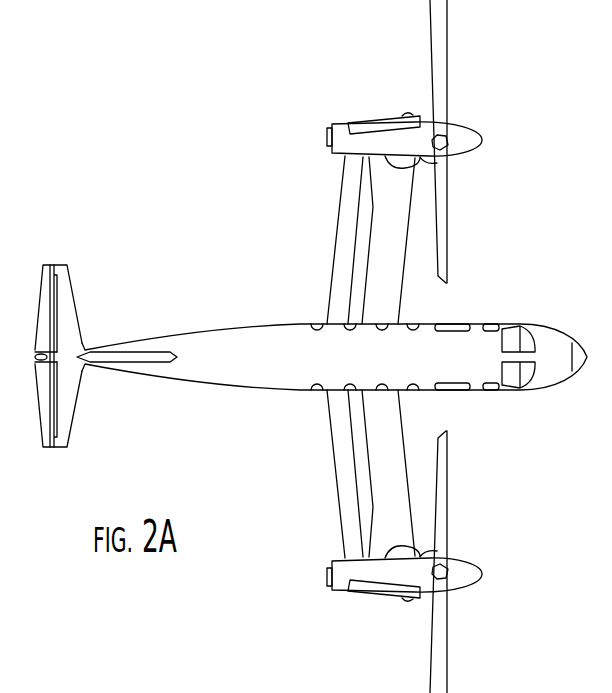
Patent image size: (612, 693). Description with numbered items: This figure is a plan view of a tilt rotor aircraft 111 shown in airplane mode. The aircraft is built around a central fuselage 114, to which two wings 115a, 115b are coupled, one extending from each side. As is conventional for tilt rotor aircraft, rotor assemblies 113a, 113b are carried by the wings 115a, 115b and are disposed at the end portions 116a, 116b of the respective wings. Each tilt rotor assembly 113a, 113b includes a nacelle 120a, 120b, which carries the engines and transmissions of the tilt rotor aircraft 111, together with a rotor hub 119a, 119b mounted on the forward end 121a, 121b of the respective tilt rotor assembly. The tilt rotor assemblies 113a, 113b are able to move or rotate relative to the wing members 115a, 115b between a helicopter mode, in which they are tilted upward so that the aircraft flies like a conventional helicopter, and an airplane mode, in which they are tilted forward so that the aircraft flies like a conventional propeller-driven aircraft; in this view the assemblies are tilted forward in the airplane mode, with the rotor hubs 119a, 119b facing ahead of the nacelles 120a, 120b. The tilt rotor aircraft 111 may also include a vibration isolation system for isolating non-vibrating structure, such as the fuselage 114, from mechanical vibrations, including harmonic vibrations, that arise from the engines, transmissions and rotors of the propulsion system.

The tilt rotor aircraft 111 is at (189, 296).
The tilt rotor assembly 113a is at (344, 109).
The tilt rotor assembly 113b is at (344, 605).
The fuselage 114 is at (238, 390).
The wing 115a is at (338, 230).
The wing 115b is at (338, 484).
The end portion 116a is at (340, 164).
The end portion 116b is at (340, 551).
The rotor hub 119a is at (478, 133).
The rotor hub 119b is at (478, 581).
The nacelle 120a is at (338, 127).
The nacelle 120b is at (338, 588).
The forward end 121a is at (423, 158).
The forward end 121b is at (423, 556).